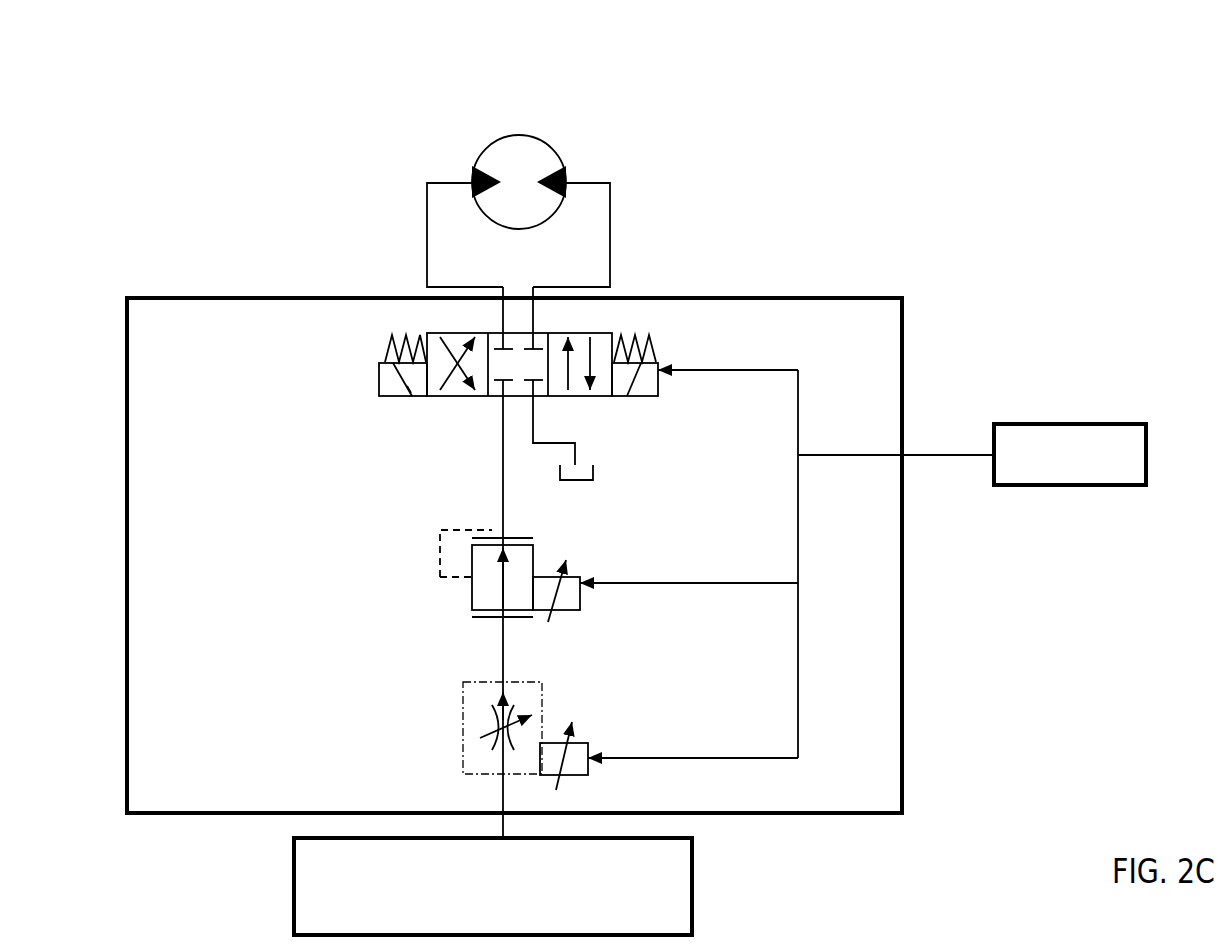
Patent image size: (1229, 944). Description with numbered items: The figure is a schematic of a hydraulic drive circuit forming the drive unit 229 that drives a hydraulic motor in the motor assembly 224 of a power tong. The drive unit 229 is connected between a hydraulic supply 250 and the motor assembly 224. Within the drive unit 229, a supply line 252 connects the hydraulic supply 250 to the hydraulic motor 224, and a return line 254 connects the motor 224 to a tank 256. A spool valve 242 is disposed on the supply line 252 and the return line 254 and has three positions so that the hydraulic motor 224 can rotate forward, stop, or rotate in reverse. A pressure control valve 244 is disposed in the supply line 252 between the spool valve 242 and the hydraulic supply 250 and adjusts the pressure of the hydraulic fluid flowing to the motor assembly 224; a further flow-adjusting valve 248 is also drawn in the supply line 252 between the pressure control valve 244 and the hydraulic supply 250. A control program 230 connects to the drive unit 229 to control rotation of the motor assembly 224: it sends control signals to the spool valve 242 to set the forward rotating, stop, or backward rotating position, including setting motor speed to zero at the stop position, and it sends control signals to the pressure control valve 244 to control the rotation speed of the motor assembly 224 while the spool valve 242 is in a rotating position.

The motor assembly 224 is at (480, 155).
The drive unit 229 is at (205, 786).
The control program 230 is at (972, 564).
The spool valve 242 is at (380, 370).
The pressure control valve 244 is at (440, 572).
The adjustable flow control valve 248 is at (457, 733).
The hydraulic supply 250 is at (493, 886).
The supply line 252 is at (503, 487).
The return line 254 is at (560, 443).
The tank 256 is at (620, 485).